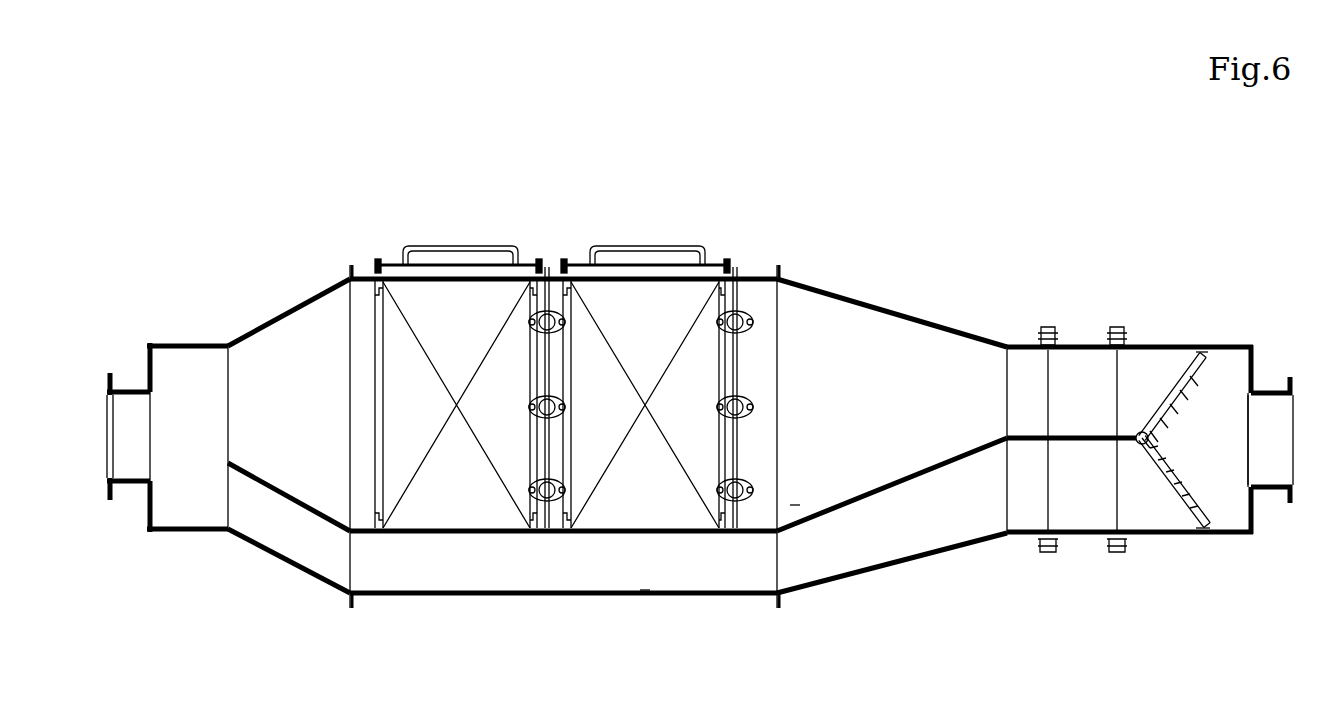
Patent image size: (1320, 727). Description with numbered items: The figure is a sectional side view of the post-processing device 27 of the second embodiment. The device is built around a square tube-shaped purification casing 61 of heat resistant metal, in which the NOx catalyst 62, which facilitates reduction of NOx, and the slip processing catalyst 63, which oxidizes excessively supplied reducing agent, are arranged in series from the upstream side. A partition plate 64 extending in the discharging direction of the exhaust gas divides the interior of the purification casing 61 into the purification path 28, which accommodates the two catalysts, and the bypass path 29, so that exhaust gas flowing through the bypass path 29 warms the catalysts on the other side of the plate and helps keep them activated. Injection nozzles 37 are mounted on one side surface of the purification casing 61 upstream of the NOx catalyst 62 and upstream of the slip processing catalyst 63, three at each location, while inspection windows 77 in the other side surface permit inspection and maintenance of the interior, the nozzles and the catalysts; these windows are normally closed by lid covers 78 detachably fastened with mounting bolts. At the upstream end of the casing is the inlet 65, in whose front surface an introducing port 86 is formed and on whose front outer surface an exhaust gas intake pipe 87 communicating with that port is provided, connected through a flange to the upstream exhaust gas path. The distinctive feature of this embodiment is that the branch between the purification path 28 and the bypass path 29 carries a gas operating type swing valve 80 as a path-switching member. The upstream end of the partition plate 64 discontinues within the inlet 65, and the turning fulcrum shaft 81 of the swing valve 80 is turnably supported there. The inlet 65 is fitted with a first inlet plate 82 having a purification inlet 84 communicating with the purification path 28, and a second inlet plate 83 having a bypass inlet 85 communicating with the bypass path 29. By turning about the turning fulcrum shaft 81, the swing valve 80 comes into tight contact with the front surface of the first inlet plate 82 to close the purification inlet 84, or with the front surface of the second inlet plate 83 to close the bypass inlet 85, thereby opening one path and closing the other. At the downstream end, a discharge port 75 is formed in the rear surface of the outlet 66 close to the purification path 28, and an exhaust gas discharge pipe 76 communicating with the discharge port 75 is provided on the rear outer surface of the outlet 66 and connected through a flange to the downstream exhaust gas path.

The post-processing device 27 is at (333, 257).
The purification path 28 is at (810, 503).
The bypass path 29 is at (645, 570).
The injection nozzle 37 is at (548, 312).
The purification casing 61 is at (767, 275).
The NOx catalyst 62 is at (605, 513).
The slip processing catalyst 63 is at (419, 512).
The partition plate 64 is at (272, 483).
The inlet 65 is at (1226, 370).
The outlet 66 is at (190, 490).
The discharge port 75 is at (148, 412).
The exhaust gas discharge pipe 76 is at (130, 486).
The inspection window 77 is at (417, 275).
The lid cover 78 is at (452, 262).
The swing valve 80 is at (1178, 472).
The turning fulcrum shaft 81 is at (1137, 432).
The first inlet plate 82 is at (1187, 345).
The second inlet plate 83 is at (1193, 532).
The purification inlet 84 is at (1152, 412).
The bypass inlet 85 is at (1162, 480).
The introducing port 86 is at (1248, 470).
The exhaust gas intake pipe 87 is at (1273, 392).